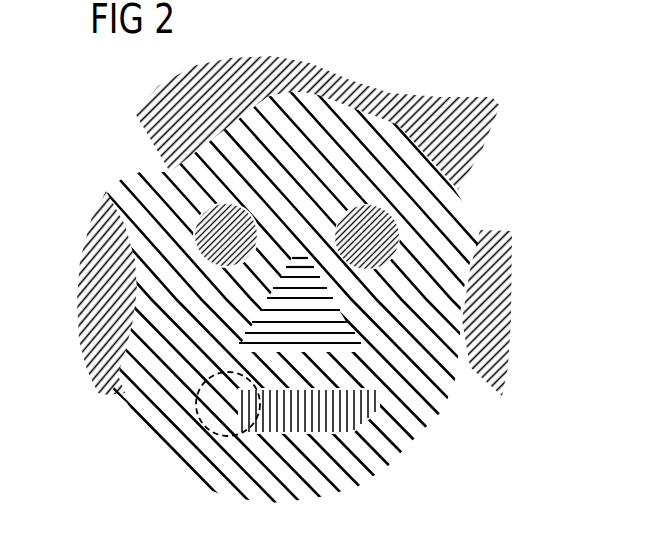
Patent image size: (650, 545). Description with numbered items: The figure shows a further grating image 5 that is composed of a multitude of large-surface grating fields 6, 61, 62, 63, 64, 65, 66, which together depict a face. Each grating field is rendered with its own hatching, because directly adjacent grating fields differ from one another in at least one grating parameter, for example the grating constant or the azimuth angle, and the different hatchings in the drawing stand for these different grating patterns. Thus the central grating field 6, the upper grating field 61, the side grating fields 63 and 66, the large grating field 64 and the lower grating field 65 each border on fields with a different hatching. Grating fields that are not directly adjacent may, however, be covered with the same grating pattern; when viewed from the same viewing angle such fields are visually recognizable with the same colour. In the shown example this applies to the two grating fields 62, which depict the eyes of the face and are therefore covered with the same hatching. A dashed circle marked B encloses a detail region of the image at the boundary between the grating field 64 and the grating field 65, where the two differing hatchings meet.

The grating image 5 is at (415, 93).
The grating field 6 is at (306, 245).
The grating field 61 is at (481, 123).
The grating fields 62 is at (197, 228).
The grating field 63 is at (487, 321).
The grating field 64 is at (408, 430).
The grating field 65 is at (262, 430).
The grating field 66 is at (96, 275).
The detail region B is at (195, 411).